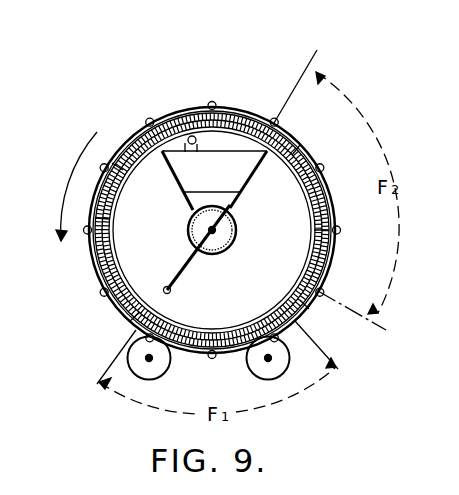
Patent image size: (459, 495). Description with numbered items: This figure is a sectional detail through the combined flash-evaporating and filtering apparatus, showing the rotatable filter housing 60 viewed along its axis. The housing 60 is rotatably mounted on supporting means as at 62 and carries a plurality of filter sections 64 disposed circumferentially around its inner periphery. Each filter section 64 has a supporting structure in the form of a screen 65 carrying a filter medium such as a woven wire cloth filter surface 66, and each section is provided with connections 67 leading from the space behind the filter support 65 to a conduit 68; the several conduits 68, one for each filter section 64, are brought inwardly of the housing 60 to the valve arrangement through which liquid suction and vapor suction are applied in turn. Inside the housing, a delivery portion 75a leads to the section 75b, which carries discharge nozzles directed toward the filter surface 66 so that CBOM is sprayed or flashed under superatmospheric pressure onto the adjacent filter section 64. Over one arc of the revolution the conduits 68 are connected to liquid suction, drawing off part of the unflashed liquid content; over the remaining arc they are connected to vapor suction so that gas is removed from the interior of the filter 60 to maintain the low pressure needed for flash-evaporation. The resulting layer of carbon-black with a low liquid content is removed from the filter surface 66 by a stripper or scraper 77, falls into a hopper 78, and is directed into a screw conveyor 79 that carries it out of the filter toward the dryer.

The filter housing 60 is at (140, 142).
The rotatable mounting 62 is at (176, 348).
The filter section 64 is at (313, 211).
The screen 65 is at (293, 160).
The woven wire cloth filter surface 66 is at (308, 176).
The connections 67 is at (326, 170).
The conduit 68 is at (101, 291).
The pointer arm 75a is at (188, 275).
The section 75b is at (172, 291).
The stripper or scraper 77 is at (196, 141).
The hopper 78 is at (182, 184).
The screw conveyor 79 is at (219, 241).